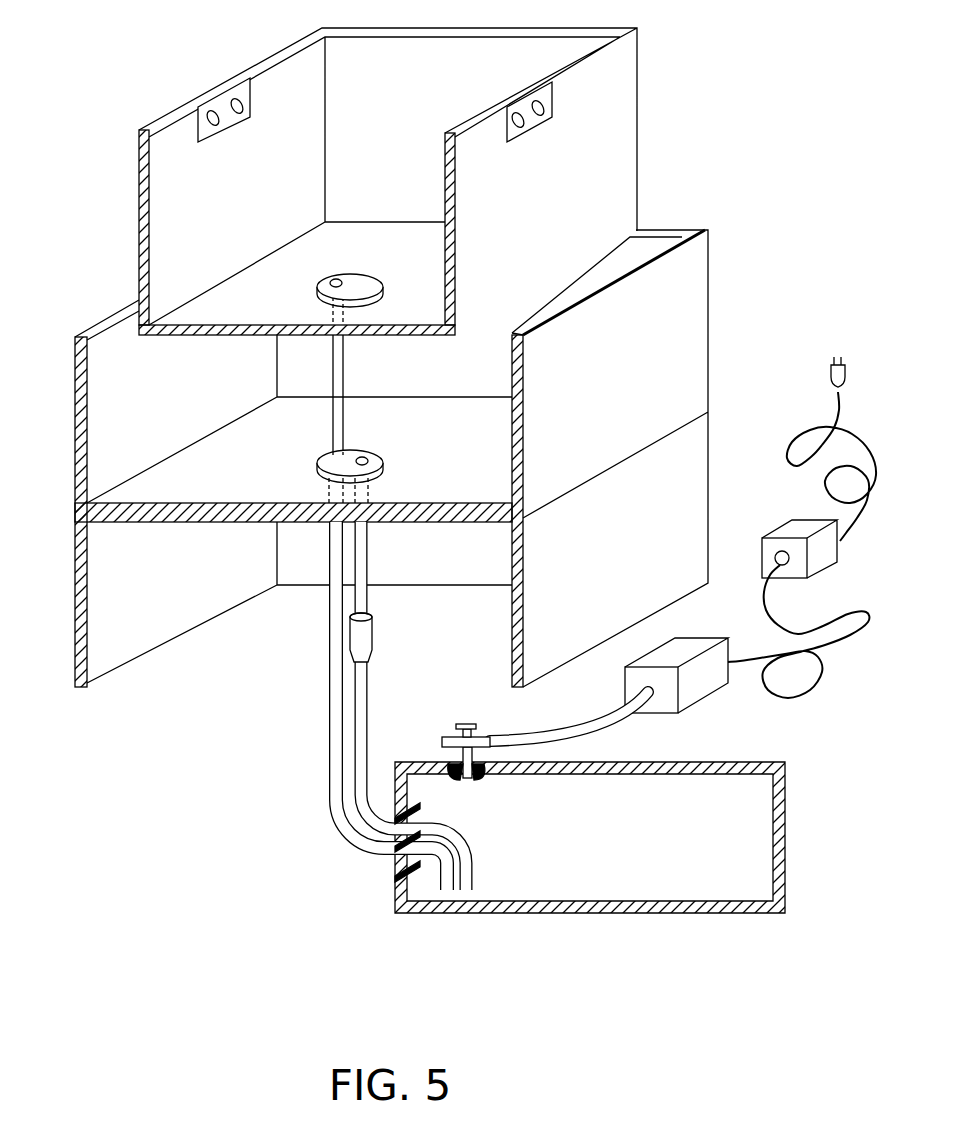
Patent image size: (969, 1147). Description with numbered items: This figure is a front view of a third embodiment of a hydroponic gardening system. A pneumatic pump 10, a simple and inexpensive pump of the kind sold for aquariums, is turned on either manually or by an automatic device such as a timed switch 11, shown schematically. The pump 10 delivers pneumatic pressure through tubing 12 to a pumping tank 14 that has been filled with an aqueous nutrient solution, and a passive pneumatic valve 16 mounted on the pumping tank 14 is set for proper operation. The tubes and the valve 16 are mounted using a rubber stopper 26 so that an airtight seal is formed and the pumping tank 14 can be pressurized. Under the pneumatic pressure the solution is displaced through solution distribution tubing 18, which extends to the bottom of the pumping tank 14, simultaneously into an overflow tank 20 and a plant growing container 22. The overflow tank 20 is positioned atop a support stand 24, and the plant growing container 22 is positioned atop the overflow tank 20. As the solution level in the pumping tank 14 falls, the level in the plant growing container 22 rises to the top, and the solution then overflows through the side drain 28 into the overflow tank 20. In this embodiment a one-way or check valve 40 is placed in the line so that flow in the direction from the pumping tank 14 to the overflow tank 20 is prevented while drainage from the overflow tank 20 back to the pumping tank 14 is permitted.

The pneumatic pump 10 is at (692, 693).
The timed switch 11 is at (818, 565).
The tubing 12 is at (595, 720).
The pumping tank 14 is at (528, 910).
The passive pneumatic valve 16 is at (452, 738).
The solution distribution tubing 18 is at (322, 795).
The overflow tank 20 is at (678, 328).
The plant growing container 22 is at (139, 222).
The support stand 24 is at (73, 610).
The rubber stopper 26 is at (482, 780).
The side drain 28 is at (227, 102).
The check valve 40 is at (365, 637).